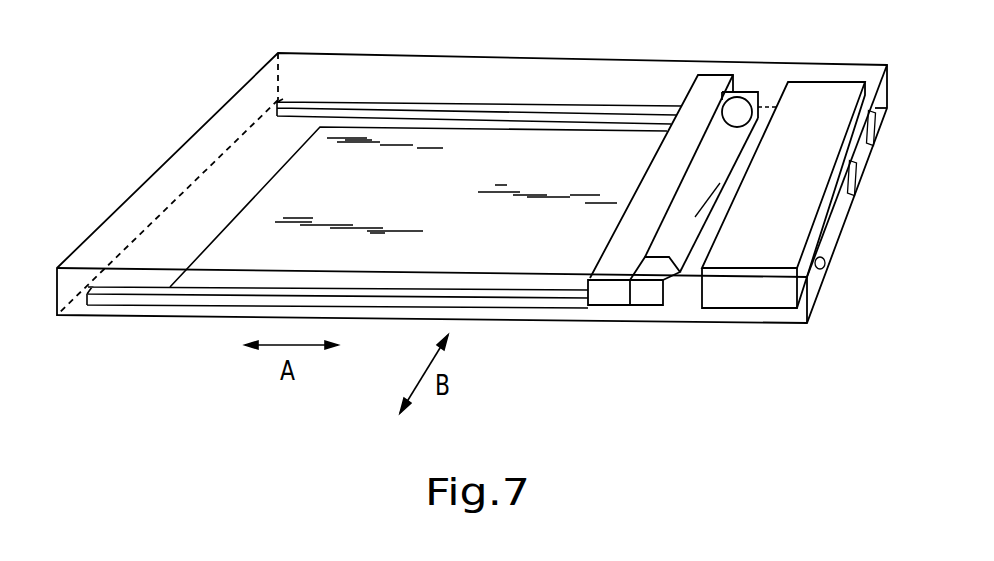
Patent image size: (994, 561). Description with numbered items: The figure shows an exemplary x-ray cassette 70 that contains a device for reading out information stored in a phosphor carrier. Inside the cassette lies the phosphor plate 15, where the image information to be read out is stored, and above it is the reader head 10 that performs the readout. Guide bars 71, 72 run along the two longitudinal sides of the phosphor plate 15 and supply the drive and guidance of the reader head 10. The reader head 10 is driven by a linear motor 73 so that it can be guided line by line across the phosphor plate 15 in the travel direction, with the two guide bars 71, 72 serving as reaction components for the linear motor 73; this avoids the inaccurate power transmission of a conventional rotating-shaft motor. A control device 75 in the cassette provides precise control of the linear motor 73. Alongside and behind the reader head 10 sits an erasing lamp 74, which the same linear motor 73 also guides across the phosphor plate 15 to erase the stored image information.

The x-ray cassette 70 is at (183, 120).
The guide bar 71 is at (115, 297).
The guide bar 72 is at (358, 104).
The phosphor plate 15 is at (318, 170).
The reader head 10 is at (695, 95).
The linear motor 73 is at (652, 295).
The erasing lamp 74 is at (748, 112).
The control device 75 is at (818, 93).